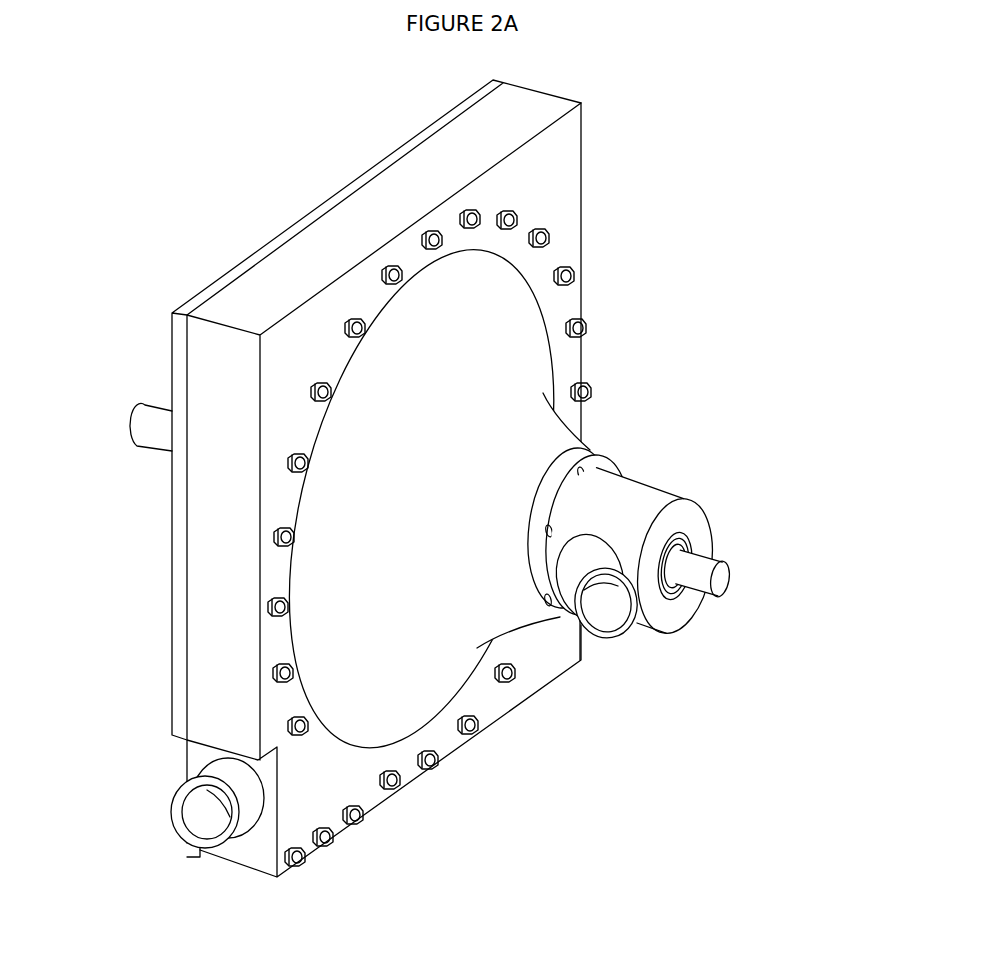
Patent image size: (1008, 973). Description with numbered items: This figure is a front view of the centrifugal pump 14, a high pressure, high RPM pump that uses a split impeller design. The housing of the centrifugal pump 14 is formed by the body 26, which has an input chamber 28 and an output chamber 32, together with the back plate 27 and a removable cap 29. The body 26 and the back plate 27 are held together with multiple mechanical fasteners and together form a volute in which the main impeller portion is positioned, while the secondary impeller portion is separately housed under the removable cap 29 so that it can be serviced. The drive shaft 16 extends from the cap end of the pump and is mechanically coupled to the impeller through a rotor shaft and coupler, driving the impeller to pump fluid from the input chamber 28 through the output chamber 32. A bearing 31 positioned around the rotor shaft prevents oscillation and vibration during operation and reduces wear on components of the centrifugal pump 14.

The centrifugal pump 14 is at (771, 257).
The drive shaft 16 is at (697, 574).
The body 26 is at (220, 712).
The back plate 27 is at (181, 339).
The input chamber 28 is at (608, 611).
The removable cap 29 is at (623, 498).
The bearing 31 is at (688, 532).
The output chamber 32 is at (212, 827).